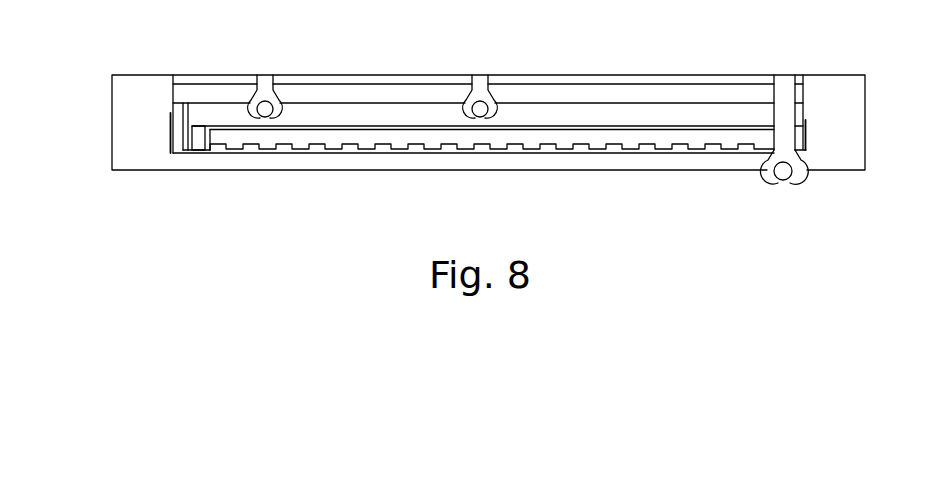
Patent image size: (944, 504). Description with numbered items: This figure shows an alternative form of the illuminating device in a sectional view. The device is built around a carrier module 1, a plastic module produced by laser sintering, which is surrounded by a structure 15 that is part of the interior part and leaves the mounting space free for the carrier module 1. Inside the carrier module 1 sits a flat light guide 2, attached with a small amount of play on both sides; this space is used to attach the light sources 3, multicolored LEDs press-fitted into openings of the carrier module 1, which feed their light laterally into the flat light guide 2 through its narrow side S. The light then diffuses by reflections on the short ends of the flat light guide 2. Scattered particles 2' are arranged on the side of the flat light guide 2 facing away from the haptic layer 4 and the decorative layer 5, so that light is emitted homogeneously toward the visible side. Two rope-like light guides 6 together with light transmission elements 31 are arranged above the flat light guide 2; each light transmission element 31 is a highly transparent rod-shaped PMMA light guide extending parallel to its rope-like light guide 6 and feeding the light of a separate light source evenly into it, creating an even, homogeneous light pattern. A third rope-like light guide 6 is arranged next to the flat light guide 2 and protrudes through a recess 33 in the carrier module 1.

The carrier module 1 is at (380, 157).
The flat light guide 2 is at (497, 82).
The scattered particles 2' is at (492, 82).
The light sources 3 is at (197, 122).
The haptic layer 4 is at (313, 99).
The decorative layer 5 is at (385, 81).
The rope-like light guide 6 is at (265, 97).
The structure 15 is at (835, 108).
The light transmission element 31 is at (265, 120).
The recess 33 is at (793, 163).
The narrow side S is at (176, 137).